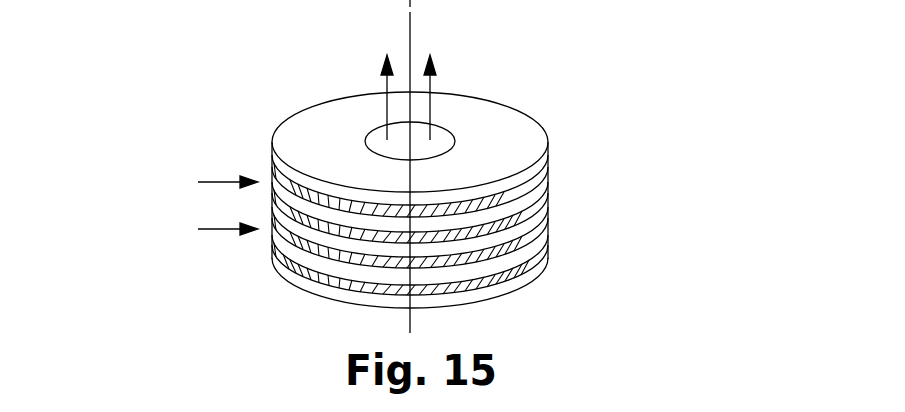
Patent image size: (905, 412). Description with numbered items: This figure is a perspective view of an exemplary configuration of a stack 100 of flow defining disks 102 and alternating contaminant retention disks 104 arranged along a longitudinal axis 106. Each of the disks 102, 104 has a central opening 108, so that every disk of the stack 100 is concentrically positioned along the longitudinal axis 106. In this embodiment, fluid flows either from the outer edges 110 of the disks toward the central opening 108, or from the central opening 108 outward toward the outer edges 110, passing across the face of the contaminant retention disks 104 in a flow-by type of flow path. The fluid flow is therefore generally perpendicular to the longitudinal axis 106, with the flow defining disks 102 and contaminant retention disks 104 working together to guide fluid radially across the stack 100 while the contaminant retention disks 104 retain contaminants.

The stack 100 is at (536, 105).
The flow defining disks 102 is at (530, 139).
The contaminant retention disks 104 is at (532, 194).
The longitudinal axis 106 is at (411, 29).
The central opening 108 is at (445, 137).
The outer edges 110 is at (270, 168).